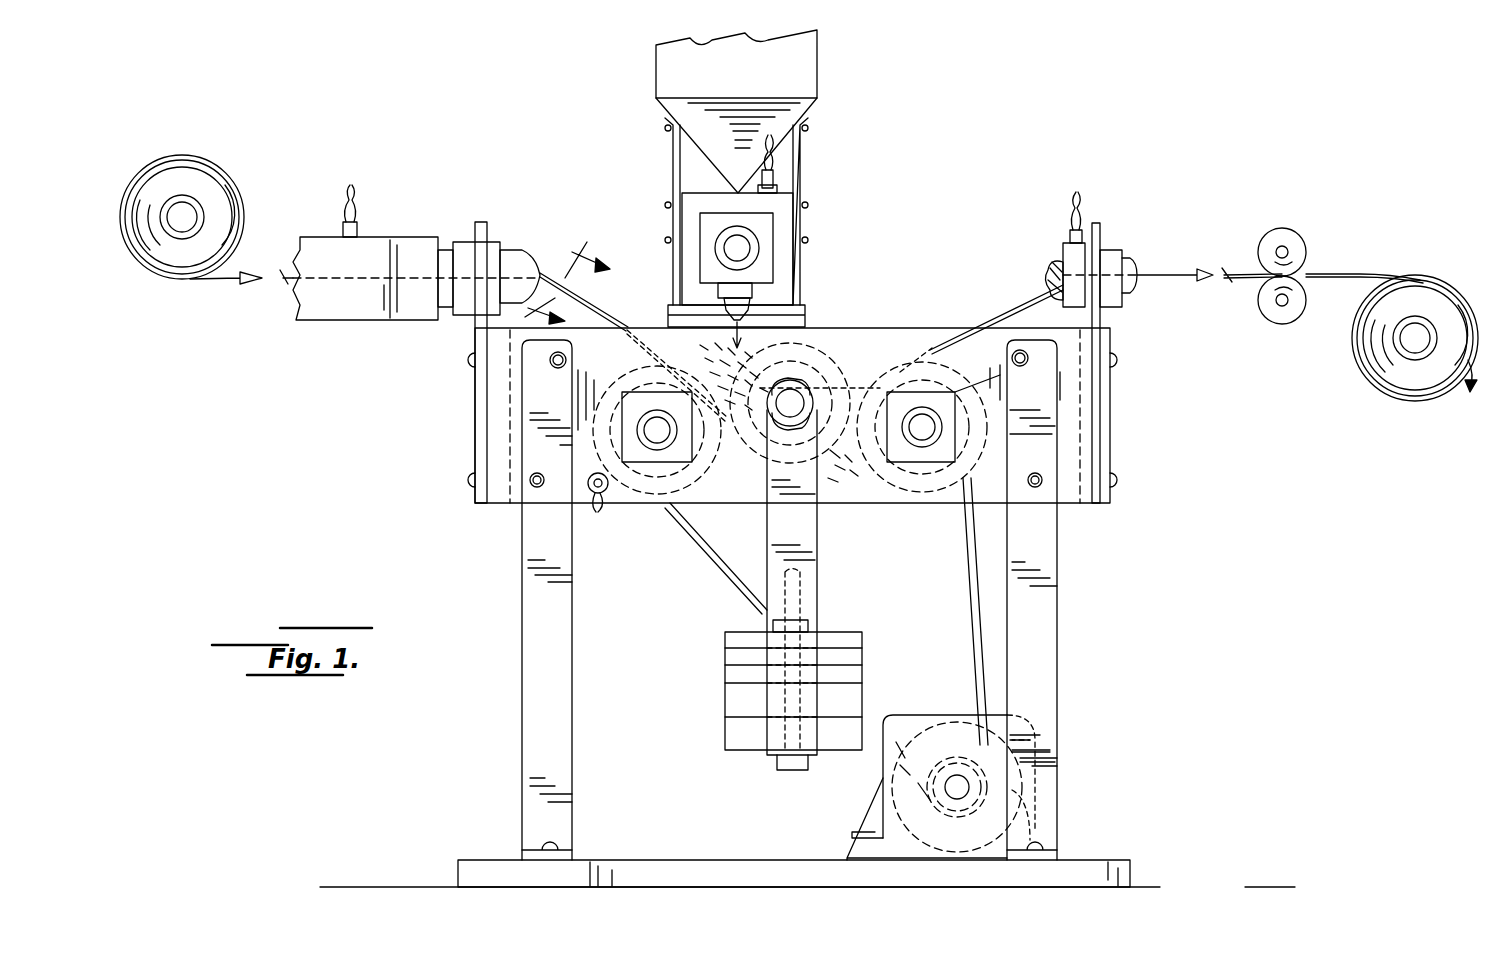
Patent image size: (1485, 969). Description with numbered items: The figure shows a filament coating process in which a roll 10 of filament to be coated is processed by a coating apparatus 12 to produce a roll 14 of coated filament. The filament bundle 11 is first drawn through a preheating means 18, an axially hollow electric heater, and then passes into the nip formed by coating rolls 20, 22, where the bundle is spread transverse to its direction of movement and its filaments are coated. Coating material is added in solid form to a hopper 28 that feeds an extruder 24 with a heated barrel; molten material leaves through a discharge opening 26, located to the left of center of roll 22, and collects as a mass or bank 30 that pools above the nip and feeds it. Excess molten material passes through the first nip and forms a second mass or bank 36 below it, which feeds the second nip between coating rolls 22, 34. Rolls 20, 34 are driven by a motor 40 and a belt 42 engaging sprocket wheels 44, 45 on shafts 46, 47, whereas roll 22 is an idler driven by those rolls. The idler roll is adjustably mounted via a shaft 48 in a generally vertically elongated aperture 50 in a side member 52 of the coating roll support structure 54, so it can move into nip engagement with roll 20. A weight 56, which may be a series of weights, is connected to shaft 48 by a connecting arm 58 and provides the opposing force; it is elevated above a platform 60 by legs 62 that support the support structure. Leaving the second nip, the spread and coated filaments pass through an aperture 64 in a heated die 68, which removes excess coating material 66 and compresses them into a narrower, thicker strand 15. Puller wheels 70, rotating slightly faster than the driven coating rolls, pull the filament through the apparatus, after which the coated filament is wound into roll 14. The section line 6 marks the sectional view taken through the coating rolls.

The roll of filament 10 is at (182, 158).
The coating apparatus 12 is at (498, 155).
The preheating means 18 is at (405, 237).
The hopper 28 is at (810, 65).
The extruder 24 is at (800, 222).
The discharge opening 26 is at (755, 312).
The section line 6- 6 is at (557, 282).
The filament bundle 11 is at (603, 302).
The mass or bank of coating material 30 is at (700, 355).
The coating roll support structure 54 is at (932, 328).
The coating roll 20 is at (642, 380).
The sprocket wheel 44 is at (700, 470).
The shaft 46 is at (650, 435).
The coating roll 22 is at (830, 360).
The coating roll 34 is at (958, 378).
The sprocket wheel 45 is at (962, 415).
The shaft 47 is at (912, 440).
The shaft 48 is at (788, 396).
The second mass or bank of coating material 36 is at (852, 445).
The generally vertically elongated aperture 50 is at (805, 375).
The connecting arm 58 is at (820, 562).
The side member 52 is at (720, 500).
The weight 56 is at (725, 675).
The belt 42 is at (968, 625).
The motor 40 is at (1000, 712).
The legs 62 is at (1050, 630).
The platform 60 is at (668, 862).
The aperture 64 is at (1140, 270).
The excess coating material 66 is at (1050, 280).
The heated die 68 is at (1058, 250).
The puller wheels 70 is at (1285, 230).
The strand 15 is at (1190, 280).
The roll of coated filament 14 is at (1452, 292).